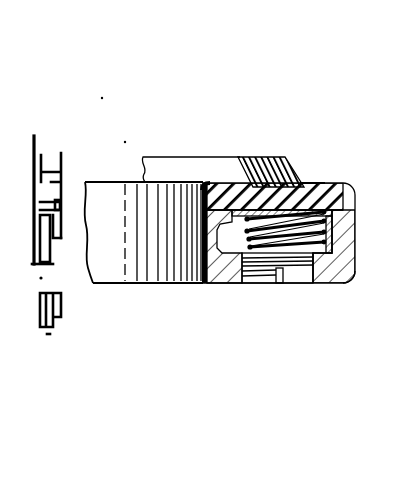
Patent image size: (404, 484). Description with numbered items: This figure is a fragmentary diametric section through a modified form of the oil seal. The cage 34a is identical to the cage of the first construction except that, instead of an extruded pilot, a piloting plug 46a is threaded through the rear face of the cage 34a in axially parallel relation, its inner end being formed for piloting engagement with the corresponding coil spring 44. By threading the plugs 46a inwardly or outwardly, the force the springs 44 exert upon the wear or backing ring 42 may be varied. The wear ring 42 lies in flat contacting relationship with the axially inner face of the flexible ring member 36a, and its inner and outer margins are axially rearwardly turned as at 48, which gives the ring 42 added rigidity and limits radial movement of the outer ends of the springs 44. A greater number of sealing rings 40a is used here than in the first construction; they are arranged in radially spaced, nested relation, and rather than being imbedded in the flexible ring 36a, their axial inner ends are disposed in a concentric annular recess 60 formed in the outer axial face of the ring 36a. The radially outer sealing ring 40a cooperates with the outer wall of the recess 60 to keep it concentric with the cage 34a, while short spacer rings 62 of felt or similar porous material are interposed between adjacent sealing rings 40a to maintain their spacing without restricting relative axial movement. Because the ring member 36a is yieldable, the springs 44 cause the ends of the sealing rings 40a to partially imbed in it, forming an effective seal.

The cage 34a is at (340, 275).
The flexible ring member 36a is at (330, 183).
The sealing rings 40a is at (296, 183).
The wear ring 42 is at (322, 218).
The coil springs 44 is at (326, 232).
The piloting plug 46a is at (306, 268).
The turned margins of wear ring 48 is at (228, 224).
The annular recess 60 is at (314, 183).
The spacer rings 62 is at (311, 181).